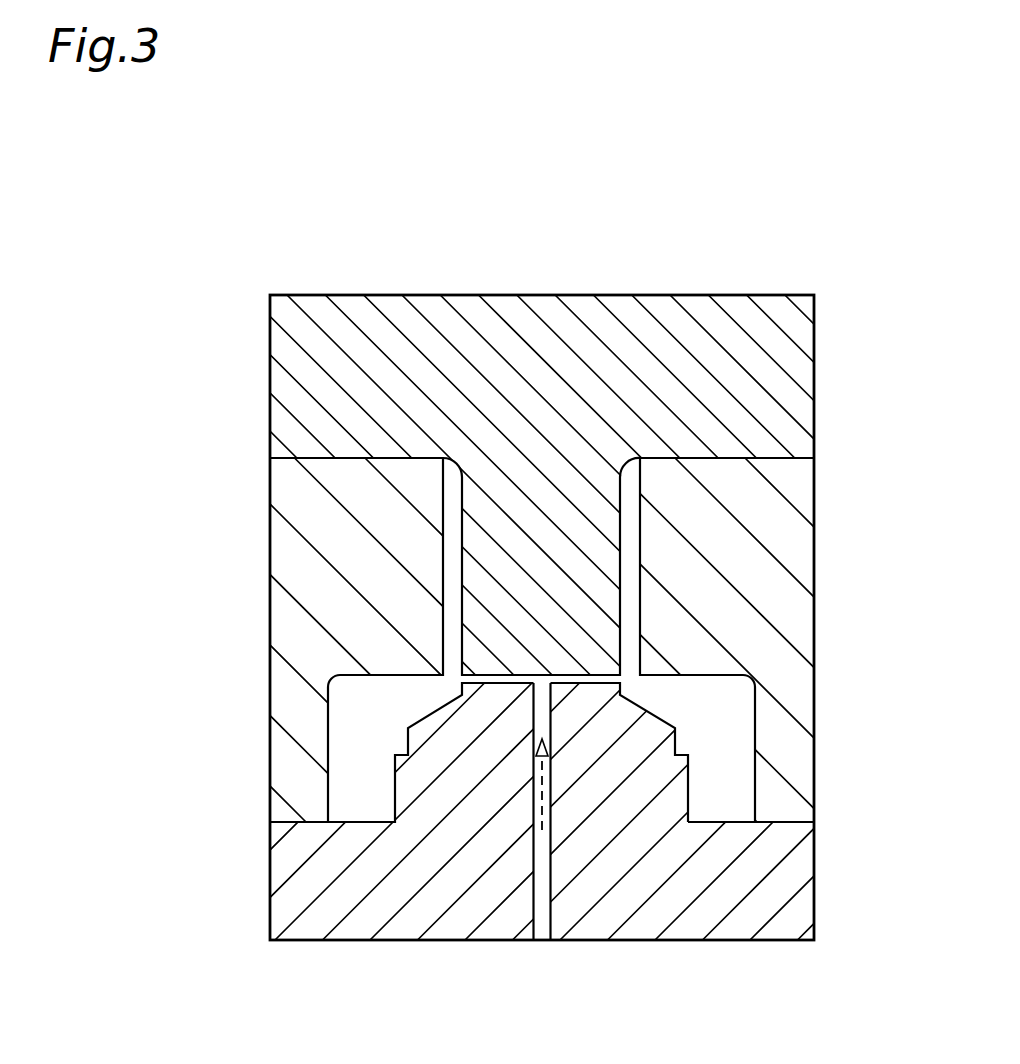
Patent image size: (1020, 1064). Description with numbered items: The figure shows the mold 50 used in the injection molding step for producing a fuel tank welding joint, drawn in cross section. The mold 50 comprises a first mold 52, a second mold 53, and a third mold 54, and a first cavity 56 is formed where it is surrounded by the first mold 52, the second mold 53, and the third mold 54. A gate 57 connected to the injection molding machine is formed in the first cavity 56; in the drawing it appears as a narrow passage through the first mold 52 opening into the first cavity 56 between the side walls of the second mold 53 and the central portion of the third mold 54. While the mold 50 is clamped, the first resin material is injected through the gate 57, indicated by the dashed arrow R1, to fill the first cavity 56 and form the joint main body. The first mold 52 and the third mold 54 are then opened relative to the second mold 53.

The mold 50 is at (763, 293).
The first mold 52 is at (607, 942).
The second mold 53 is at (288, 595).
The third mold 54 is at (615, 308).
The first cavity 56 is at (730, 777).
The gate 57 is at (533, 887).
The resin flow R1 is at (535, 803).